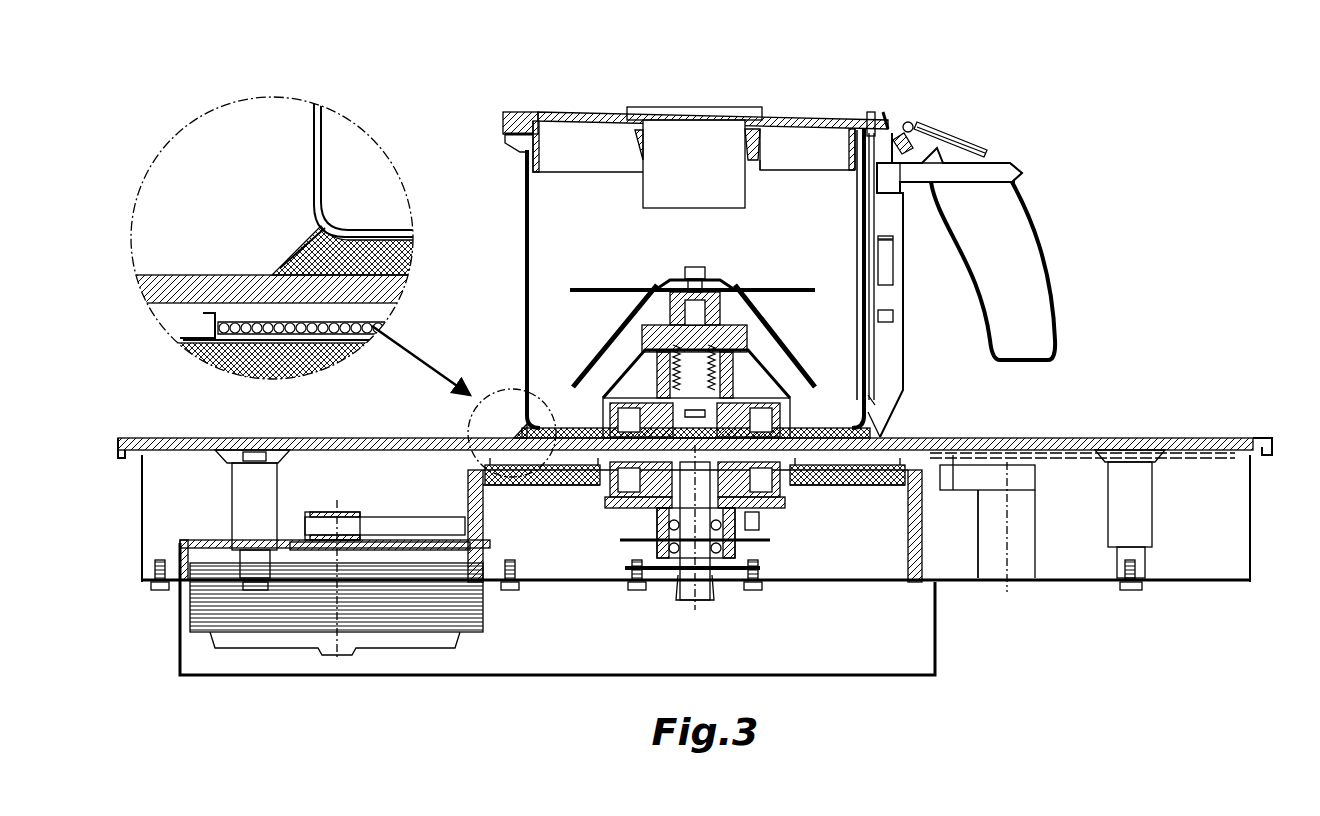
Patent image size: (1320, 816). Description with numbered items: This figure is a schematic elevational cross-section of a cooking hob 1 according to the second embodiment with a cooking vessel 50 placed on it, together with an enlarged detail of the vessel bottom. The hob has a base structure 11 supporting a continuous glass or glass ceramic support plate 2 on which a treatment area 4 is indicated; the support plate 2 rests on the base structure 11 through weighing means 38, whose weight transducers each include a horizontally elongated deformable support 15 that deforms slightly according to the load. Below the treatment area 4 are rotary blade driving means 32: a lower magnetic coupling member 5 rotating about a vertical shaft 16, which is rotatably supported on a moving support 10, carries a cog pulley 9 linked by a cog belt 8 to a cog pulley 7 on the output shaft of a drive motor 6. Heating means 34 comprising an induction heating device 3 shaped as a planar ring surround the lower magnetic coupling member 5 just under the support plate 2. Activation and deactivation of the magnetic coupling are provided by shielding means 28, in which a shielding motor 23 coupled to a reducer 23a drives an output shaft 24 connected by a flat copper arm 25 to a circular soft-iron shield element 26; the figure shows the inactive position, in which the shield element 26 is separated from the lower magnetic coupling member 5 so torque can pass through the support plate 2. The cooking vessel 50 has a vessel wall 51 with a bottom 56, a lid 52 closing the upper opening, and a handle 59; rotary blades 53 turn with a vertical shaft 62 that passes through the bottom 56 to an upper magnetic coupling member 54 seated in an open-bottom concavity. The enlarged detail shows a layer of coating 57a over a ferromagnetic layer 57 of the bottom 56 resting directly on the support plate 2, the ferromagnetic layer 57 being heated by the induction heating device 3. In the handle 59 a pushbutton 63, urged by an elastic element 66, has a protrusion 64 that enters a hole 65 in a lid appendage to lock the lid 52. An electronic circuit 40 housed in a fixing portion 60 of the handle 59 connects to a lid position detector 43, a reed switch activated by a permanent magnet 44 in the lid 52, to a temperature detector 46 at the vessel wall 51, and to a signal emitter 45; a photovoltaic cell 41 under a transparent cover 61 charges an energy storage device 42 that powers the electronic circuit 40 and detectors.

The cooking hob 1 is at (1045, 405).
The support plate 2 is at (407, 438).
The induction heating device 3 is at (830, 485).
The treatment area 4 is at (505, 425).
The lower magnetic coupling member 5 is at (770, 505).
The drive motor 6 is at (485, 605).
The cog pulley 7 is at (330, 515).
The cog belt 8 is at (385, 517).
The cog pulley 9 is at (740, 538).
The moving support 10 is at (205, 540).
The base structure 11 is at (935, 652).
The deformable support 15 is at (245, 570).
The vertical shaft 16 is at (700, 600).
The shielding motor 23 is at (1032, 505).
The reducer 23a is at (967, 490).
The output shaft 24 is at (920, 437).
The arm 25 is at (1045, 456).
The shield element 26 is at (1215, 460).
The shielding means 28 is at (1045, 550).
The rotary blade driving means 32 is at (405, 500).
The heating means 34 is at (860, 492).
The weighing means 38 is at (1165, 552).
The electronic circuit 40 is at (875, 300).
The photovoltaic cell 41 is at (985, 150).
The energy storage device 42 is at (892, 262).
The lid position detector 43 is at (848, 155).
The permanent magnet 44 is at (868, 112).
The signal emitter 45 is at (895, 318).
The temperature detector 46 is at (865, 395).
The cooking vessel 50 is at (775, 68).
The vessel wall 51 is at (525, 248).
The lid 52 is at (607, 112).
The rotary blades 53 is at (758, 288).
The upper magnetic coupling member 54 is at (790, 415).
The bottom 56 is at (570, 420).
The ferromagnetic layer 57 is at (300, 232).
The layer of coating 57a is at (285, 267).
The handle 59 is at (1047, 270).
The fixing portion 60 is at (905, 270).
The transparent cover 61 is at (965, 130).
The vertical shaft 62 is at (675, 370).
The pushbutton 63 is at (1025, 174).
The protrusion 64 is at (905, 122).
The hole 65 is at (913, 140).
The elastic element 66 is at (858, 185).